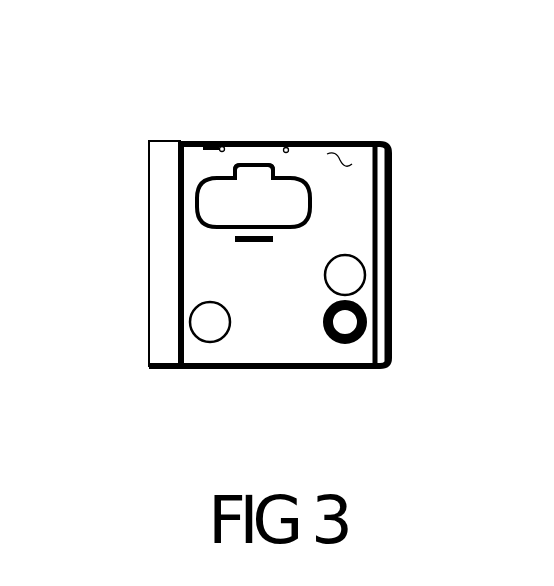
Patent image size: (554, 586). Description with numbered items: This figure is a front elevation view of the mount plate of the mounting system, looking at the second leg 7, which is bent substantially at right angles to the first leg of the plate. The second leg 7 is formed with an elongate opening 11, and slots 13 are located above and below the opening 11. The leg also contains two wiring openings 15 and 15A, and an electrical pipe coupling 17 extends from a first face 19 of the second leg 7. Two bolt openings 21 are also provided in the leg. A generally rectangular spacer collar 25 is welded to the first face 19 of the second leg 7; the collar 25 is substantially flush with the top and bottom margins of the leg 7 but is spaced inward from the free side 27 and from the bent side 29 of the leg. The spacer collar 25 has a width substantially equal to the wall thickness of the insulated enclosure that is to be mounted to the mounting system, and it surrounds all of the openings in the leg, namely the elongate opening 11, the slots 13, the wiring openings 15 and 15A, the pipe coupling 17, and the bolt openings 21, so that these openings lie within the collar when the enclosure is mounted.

The second leg 7 is at (350, 208).
The elongate opening 11 is at (200, 187).
The slots 13 is at (253, 162).
The wiring opening 15 is at (197, 338).
The wiring opening 15A is at (357, 253).
The electrical pipe coupling 17 is at (357, 340).
The first face 19 is at (343, 158).
The bolt openings 21 is at (287, 149).
The spacer collar 25 is at (378, 268).
The free side 27 is at (393, 303).
The bent side 29 is at (148, 225).